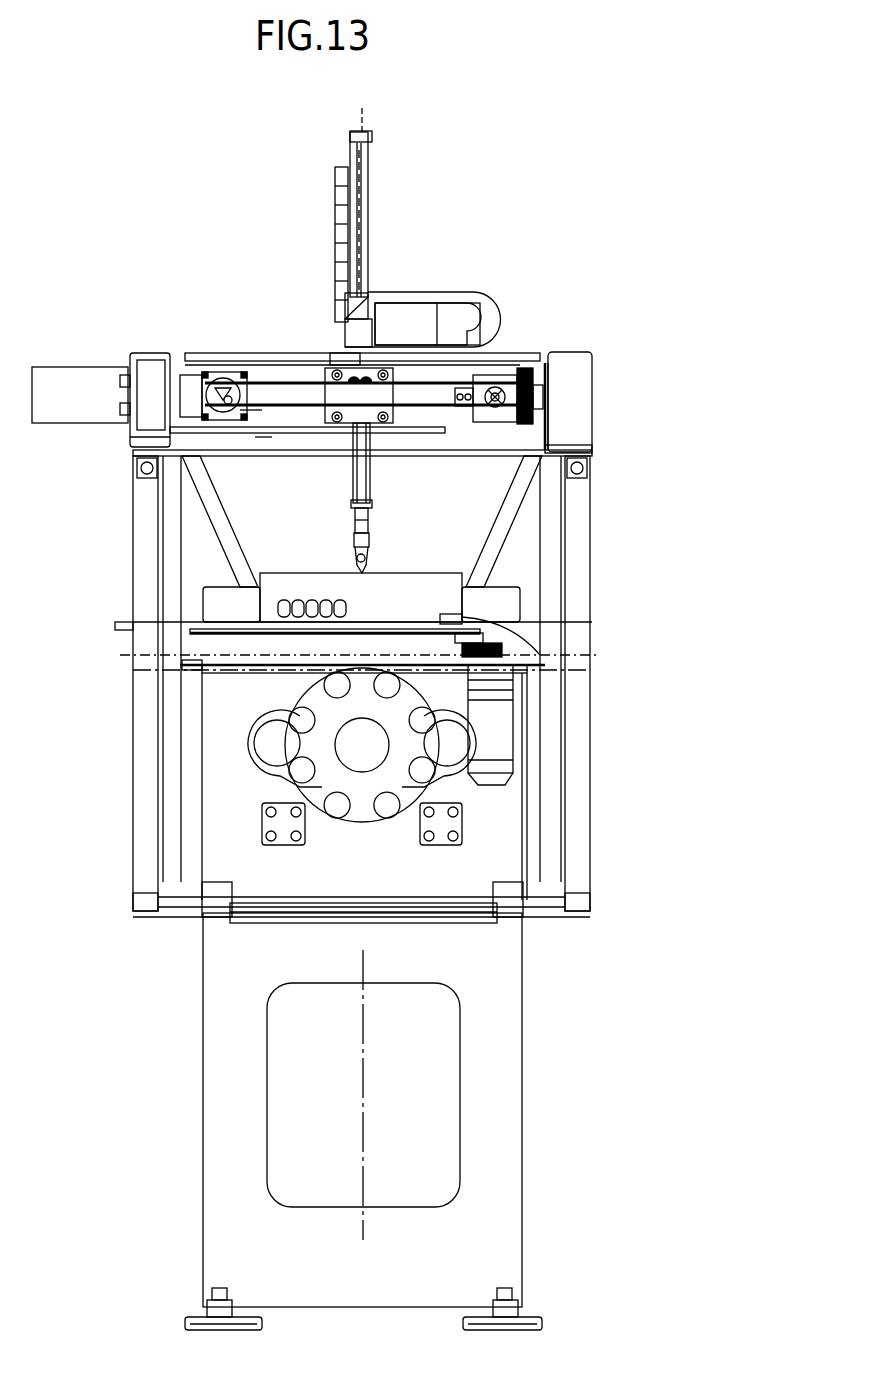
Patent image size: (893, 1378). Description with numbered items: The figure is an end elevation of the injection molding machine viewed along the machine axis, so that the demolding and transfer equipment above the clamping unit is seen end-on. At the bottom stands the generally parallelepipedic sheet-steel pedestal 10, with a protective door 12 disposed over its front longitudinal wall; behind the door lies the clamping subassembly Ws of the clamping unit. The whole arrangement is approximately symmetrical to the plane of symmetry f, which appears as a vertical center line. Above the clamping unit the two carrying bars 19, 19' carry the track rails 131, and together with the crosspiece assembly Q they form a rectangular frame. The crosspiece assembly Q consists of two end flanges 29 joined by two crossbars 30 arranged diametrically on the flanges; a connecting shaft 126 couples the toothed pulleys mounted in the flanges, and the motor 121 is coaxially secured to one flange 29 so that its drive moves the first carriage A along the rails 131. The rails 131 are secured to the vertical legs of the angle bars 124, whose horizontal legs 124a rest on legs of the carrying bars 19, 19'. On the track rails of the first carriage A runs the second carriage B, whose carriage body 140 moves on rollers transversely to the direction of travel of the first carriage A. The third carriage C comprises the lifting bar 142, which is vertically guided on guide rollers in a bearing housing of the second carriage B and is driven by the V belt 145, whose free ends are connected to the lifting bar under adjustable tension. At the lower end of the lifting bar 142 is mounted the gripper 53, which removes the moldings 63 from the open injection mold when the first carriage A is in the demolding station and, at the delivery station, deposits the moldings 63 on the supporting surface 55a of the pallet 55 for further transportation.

The pedestal 10 is at (197, 1115).
The protective door 12 is at (578, 855).
The carrying bar 19 is at (147, 357).
The carrying bar 19' is at (615, 402).
The end flange 29 is at (178, 385).
The crossbar 30 is at (266, 365).
The gripper 53 is at (364, 530).
The pallet 55 is at (438, 592).
The supporting surface 55a is at (362, 597).
The moldings 63 is at (292, 603).
The motor 121 is at (85, 405).
The angle bar 124 is at (552, 414).
The horizontal leg 124a is at (558, 452).
The connecting shaft 126 is at (287, 397).
The track rail 131 is at (545, 388).
The carriage body 140 is at (320, 367).
The lifting bar 142 is at (374, 185).
The V belt 145 is at (372, 476).
The first carriage A is at (256, 420).
The second carriage B is at (336, 348).
The third carriage C is at (381, 247).
The crosspiece assembly Q is at (263, 444).
The clamping subassembly Ws is at (357, 800).
The plane of symmetry f is at (360, 675).